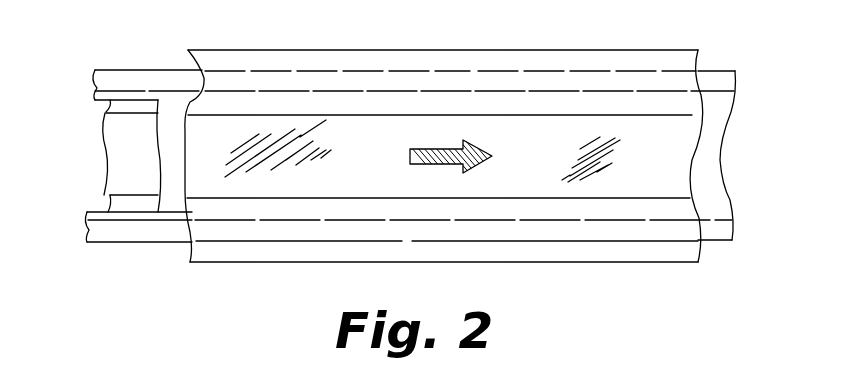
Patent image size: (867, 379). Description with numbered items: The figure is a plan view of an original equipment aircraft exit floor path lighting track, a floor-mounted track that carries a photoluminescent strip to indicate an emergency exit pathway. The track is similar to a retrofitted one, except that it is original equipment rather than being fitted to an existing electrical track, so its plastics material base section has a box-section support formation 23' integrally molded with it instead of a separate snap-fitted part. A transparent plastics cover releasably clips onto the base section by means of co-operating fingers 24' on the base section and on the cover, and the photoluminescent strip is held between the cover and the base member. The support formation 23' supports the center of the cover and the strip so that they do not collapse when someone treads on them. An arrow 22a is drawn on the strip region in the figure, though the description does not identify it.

The direction arrow / web surface 22a is at (483, 147).
The support formation 23' is at (113, 232).
The fingers 24' is at (128, 117).